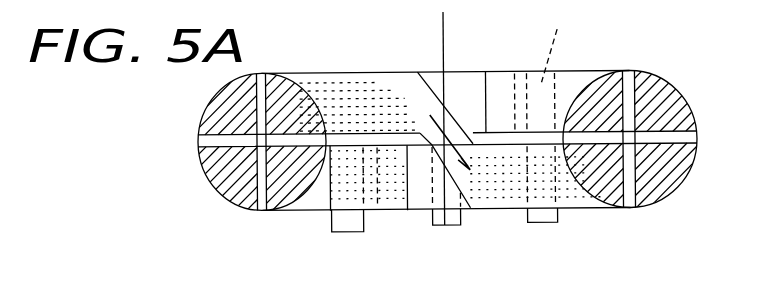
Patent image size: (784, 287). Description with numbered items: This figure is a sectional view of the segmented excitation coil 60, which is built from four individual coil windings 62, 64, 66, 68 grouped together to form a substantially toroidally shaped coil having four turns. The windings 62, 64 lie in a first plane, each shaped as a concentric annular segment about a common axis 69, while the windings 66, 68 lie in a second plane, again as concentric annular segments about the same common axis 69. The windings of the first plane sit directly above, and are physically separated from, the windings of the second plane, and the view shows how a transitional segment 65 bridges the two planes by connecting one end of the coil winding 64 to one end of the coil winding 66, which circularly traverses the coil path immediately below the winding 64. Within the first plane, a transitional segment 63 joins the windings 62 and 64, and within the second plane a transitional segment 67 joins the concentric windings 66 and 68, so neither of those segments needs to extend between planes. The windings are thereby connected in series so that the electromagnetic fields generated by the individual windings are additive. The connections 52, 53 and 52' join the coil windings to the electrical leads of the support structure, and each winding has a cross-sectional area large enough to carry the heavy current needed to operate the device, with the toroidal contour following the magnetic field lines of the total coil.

The excitation coil 60 is at (377, 50).
The coil winding 62 is at (213, 98).
The coil winding 64 is at (305, 88).
The coil winding 68 is at (213, 186).
The transitional segment 65 is at (458, 110).
The common axis 69 is at (443, 41).
The transitional segment 63 is at (500, 88).
The transitional segment 67 is at (325, 213).
The coil winding 66 is at (306, 212).
The connection 52 is at (464, 143).
The connection 52' is at (521, 247).
The connection 53 is at (456, 243).